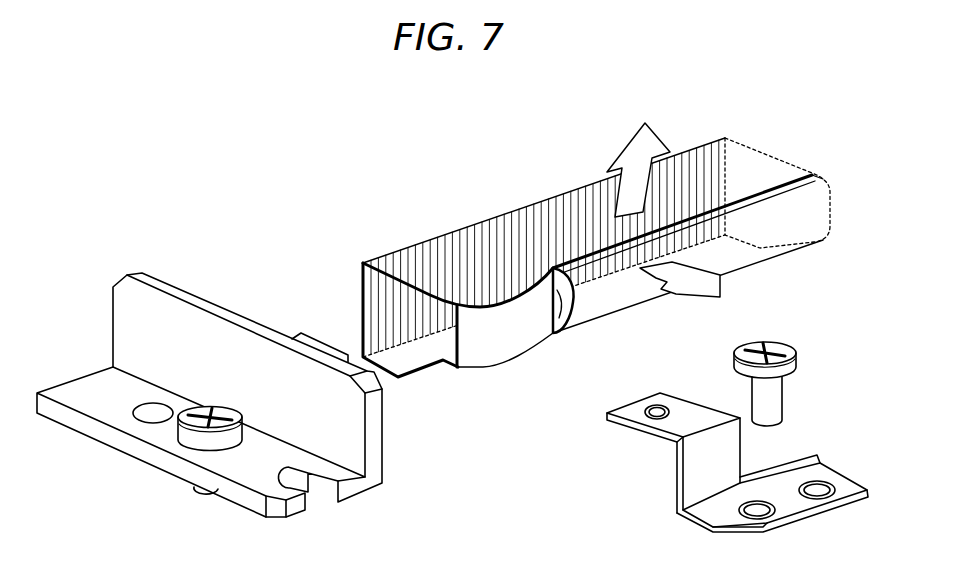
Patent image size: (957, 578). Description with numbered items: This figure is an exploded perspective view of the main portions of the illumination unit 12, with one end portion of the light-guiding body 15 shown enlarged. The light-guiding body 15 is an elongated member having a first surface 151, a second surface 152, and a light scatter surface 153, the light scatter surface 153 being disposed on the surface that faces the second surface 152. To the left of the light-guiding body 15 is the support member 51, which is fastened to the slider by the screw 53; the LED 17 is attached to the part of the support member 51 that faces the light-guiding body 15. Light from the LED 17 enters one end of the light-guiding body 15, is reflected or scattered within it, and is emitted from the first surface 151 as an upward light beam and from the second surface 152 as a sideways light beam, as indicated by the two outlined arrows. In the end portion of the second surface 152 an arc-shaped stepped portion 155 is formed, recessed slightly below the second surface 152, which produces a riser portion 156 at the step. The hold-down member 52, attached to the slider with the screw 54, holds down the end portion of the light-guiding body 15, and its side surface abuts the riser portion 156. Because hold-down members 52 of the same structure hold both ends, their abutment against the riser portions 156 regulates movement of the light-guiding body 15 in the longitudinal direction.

The illumination unit 12 is at (318, 189).
The light-guiding body 15 is at (466, 226).
The LED 17 is at (309, 340).
The support member 51 is at (162, 303).
The hold-down member 52 is at (678, 407).
The screw 53 is at (193, 429).
The screw 54 is at (787, 408).
The first surface 151 is at (747, 173).
The second surface 152 is at (727, 255).
The light scatter surface 153 is at (541, 216).
The arc-shaped stepped portion 155 is at (505, 352).
The riser portion 156 is at (575, 322).